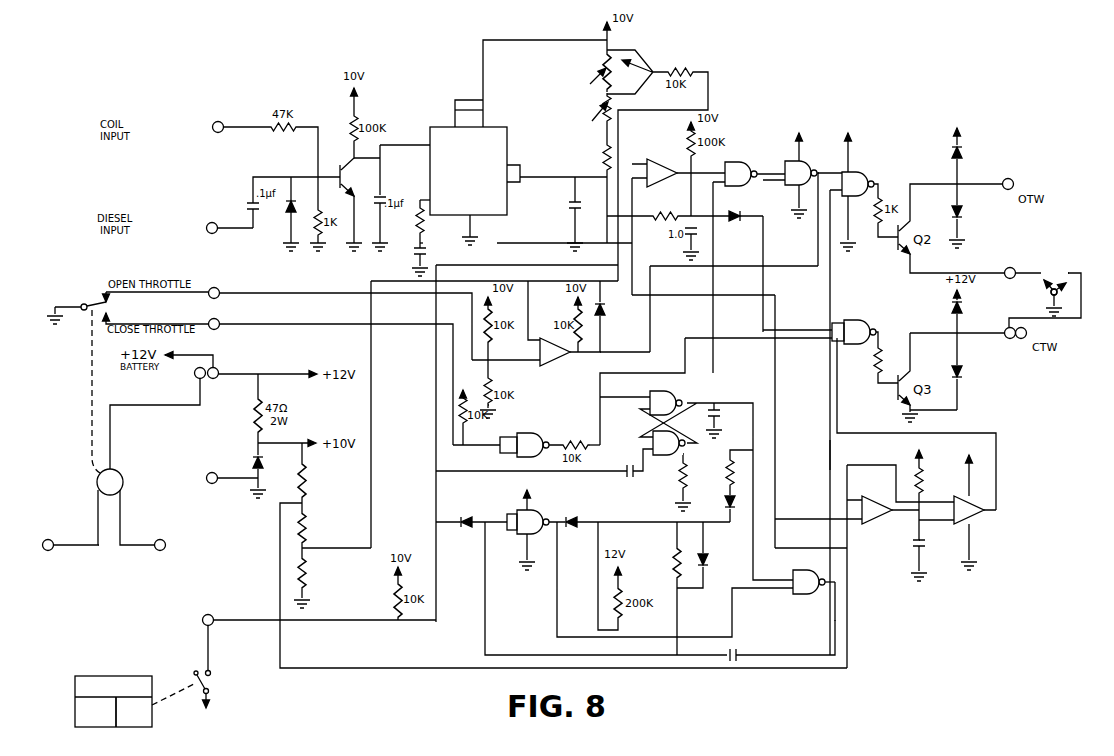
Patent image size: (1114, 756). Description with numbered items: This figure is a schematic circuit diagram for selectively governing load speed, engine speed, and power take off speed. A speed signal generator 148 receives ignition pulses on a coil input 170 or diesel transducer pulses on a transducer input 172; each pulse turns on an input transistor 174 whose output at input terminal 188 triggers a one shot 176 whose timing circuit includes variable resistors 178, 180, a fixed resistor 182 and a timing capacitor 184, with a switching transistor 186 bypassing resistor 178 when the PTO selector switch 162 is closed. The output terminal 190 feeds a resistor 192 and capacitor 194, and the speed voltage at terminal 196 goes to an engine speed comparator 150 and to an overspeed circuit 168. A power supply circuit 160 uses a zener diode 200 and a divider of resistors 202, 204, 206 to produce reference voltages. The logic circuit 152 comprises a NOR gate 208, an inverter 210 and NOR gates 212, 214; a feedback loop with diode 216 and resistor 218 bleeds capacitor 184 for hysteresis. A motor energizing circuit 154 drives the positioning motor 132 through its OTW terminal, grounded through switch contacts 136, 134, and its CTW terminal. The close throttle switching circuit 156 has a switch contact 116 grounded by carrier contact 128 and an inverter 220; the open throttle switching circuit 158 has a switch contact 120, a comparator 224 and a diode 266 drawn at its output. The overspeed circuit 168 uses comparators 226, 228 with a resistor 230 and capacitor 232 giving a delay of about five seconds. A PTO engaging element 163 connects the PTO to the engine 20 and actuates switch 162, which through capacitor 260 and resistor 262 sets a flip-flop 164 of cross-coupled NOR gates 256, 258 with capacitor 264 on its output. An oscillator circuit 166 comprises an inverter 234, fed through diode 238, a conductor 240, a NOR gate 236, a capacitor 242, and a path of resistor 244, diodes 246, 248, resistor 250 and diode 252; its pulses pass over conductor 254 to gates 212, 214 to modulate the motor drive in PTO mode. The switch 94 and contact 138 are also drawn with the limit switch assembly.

The engine 20 is at (113, 695).
The switch 94 is at (1051, 293).
The switch contact 116 is at (156, 317).
The switch contact 120 is at (156, 300).
The carrier contact 128 is at (96, 298).
The positioning motor 132 is at (99, 505).
The switch contact 134 is at (1067, 273).
The switch contact 136 is at (1042, 268).
The switch contact 138 is at (1060, 268).
The speed signal generator 148 is at (460, 47).
The engine speed comparator 150 is at (664, 160).
The logic circuit 152 is at (827, 104).
The motor energizing circuit 154 is at (931, 124).
The close throttle switching circuit 156 is at (512, 423).
The open throttle switching circuit 158 is at (586, 369).
The power supply circuit 160 is at (236, 533).
The PTO selector switch 162 is at (243, 662).
The PTO engaging element 163 is at (130, 712).
The flip-flop 164 is at (662, 481).
The oscillator circuit 166 is at (860, 607).
The overspeed circuit 168 is at (887, 574).
The coil input 170 is at (237, 120).
The transducer input 172 is at (228, 220).
The input transistor 174 is at (357, 193).
The one shot 176 is at (518, 142).
The variable resistor 178 is at (588, 71).
The variable resistor 180 is at (588, 116).
The fixed resistor 182 is at (597, 192).
The timing capacitor 184 is at (565, 214).
The switching transistor 186 is at (642, 67).
The input terminal 188 is at (405, 137).
The output terminal 190 is at (413, 193).
The resistor 192 is at (406, 224).
The capacitor 194 is at (448, 261).
The terminal 196 is at (426, 245).
The zener diode 200 is at (258, 460).
The resistor 202 is at (315, 481).
The resistor 204 is at (316, 527).
The resistor 206 is at (314, 581).
The NOR gate 208 is at (749, 166).
The inverter 210 is at (802, 166).
The NOR gate 212 is at (854, 182).
The NOR gate 214 is at (792, 345).
The diode 216 is at (742, 227).
The resistor 218 is at (666, 214).
The inverter 220 is at (506, 452).
The comparator 224 is at (561, 323).
The comparator 226 is at (864, 566).
The comparator 228 is at (978, 504).
The resistor 230 is at (939, 486).
The capacitor 232 is at (931, 558).
The inverter 234 is at (531, 522).
The NOR gate 236 is at (810, 591).
The diode 238 is at (471, 513).
The conductor 240 is at (556, 614).
The capacitor 242 is at (660, 597).
The resistor 244 is at (729, 472).
The diode 246 is at (719, 504).
The diode 248 is at (645, 514).
The resistor 250 is at (661, 588).
The diode 252 is at (706, 555).
The conductor 254 is at (828, 467).
The NOR gate 256 is at (716, 478).
The NOR gate 258 is at (676, 435).
The capacitor 260 is at (544, 463).
The resistor 262 is at (694, 483).
The capacitor 264 is at (725, 420).
The diode 266 is at (612, 316).